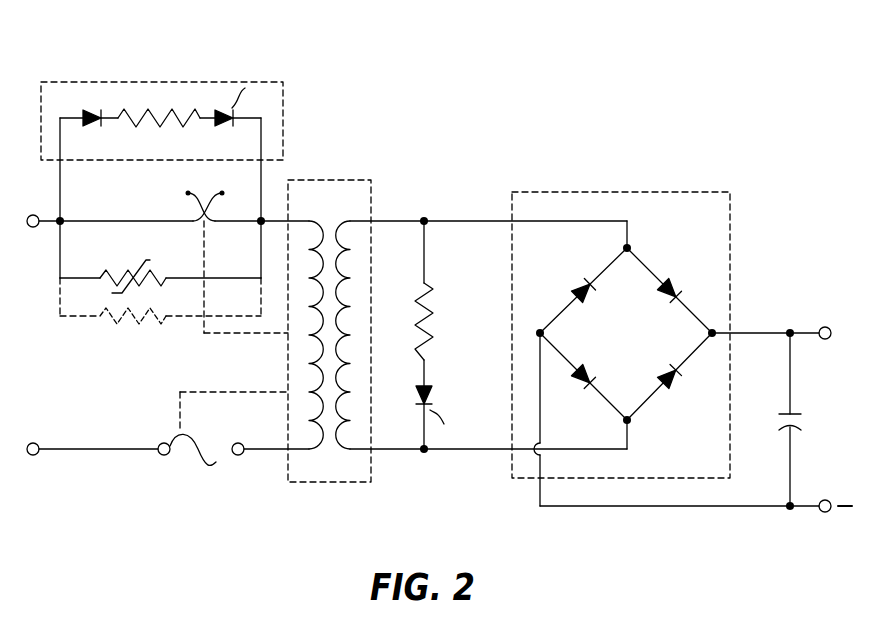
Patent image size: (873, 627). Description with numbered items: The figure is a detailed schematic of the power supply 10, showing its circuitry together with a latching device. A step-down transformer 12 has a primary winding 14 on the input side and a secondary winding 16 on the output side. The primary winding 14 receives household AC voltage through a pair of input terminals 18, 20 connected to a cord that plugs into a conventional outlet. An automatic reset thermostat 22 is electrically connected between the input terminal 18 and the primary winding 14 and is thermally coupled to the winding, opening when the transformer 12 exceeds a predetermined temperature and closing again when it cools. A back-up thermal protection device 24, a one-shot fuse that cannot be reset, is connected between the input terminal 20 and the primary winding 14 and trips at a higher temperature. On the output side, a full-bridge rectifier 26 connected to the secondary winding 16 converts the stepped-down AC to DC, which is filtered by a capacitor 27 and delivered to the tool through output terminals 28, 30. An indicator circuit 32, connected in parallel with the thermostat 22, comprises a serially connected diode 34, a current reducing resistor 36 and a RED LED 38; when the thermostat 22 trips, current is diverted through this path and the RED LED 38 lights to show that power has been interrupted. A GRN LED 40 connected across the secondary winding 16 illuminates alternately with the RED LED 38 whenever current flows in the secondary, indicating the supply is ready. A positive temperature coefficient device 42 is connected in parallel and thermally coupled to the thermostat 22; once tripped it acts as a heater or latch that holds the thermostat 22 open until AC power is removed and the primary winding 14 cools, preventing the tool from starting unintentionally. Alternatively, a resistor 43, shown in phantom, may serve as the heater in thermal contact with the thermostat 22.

The power supply 10 is at (445, 108).
The step-down transformer 12 is at (340, 180).
The primary winding 14 is at (326, 462).
The secondary winding 16 is at (350, 470).
The input terminal 18 is at (36, 215).
The input terminal 20 is at (33, 455).
The automatic reset thermostat 22 is at (203, 224).
The back-up thermal protection device 24 is at (216, 462).
The rectifier 26 is at (600, 192).
The capacitor 27 is at (800, 428).
The output terminal 28 is at (818, 328).
The output terminal 30 is at (822, 512).
The indicator circuit 32 is at (108, 82).
The diode 34 is at (90, 110).
The current reducing resistor 36 is at (150, 109).
The RED light emitting diode 38 is at (222, 128).
The GRN light emitting diode 40 is at (416, 389).
The positive temperature coefficient device 42 is at (102, 278).
The resistor 43 is at (126, 325).